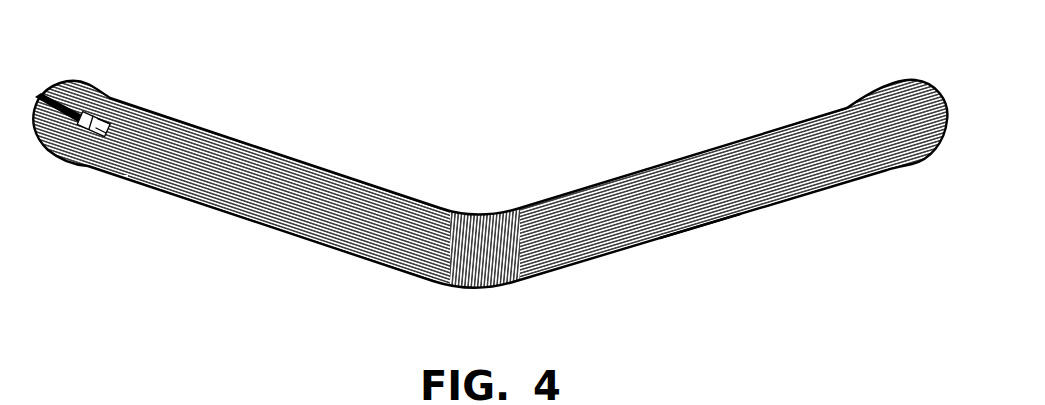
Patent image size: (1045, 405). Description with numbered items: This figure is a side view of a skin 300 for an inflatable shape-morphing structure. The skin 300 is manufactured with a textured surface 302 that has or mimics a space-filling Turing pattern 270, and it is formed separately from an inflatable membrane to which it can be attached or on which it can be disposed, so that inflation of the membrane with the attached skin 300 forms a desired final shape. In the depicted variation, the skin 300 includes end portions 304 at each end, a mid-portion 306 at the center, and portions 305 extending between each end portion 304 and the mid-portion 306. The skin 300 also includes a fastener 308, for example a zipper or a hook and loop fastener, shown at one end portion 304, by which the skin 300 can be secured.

The skin 300 is at (583, 65).
The textured surface 302 is at (780, 178).
The end portions 304 is at (133, 92).
The portions extending between an end portion and a mid-portion 305 is at (299, 159).
The mid-portion 306 is at (523, 187).
The fastener 308 is at (36, 96).
The space-filling Turing pattern 270 is at (692, 252).